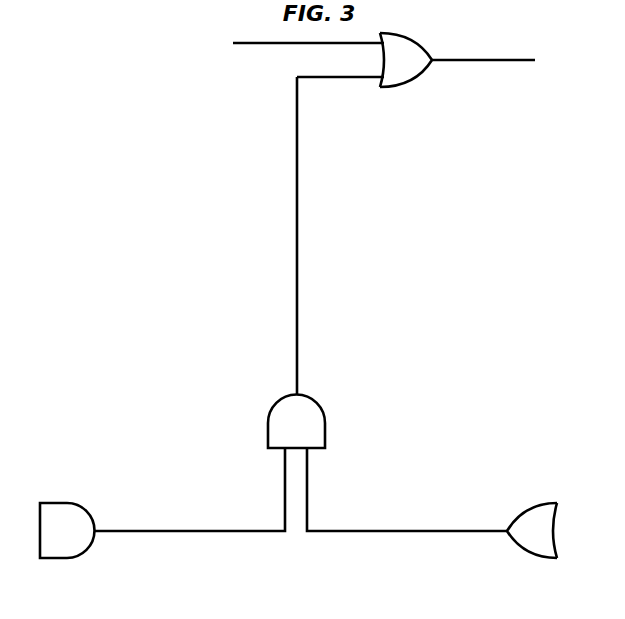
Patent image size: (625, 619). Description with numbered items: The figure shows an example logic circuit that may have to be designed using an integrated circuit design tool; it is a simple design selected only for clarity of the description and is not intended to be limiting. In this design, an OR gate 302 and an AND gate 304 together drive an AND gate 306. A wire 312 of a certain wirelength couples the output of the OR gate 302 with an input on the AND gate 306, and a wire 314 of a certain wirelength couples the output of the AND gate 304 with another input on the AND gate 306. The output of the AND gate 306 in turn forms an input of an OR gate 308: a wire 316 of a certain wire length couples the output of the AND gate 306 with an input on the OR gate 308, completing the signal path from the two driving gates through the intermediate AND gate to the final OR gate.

The OR gate 302 is at (532, 530).
The AND gate 304 is at (67, 530).
The AND gate 306 is at (296, 422).
The OR gate 308 is at (384, 60).
The wire 312 is at (407, 531).
The wire 314 is at (185, 531).
The wire 316 is at (297, 225).